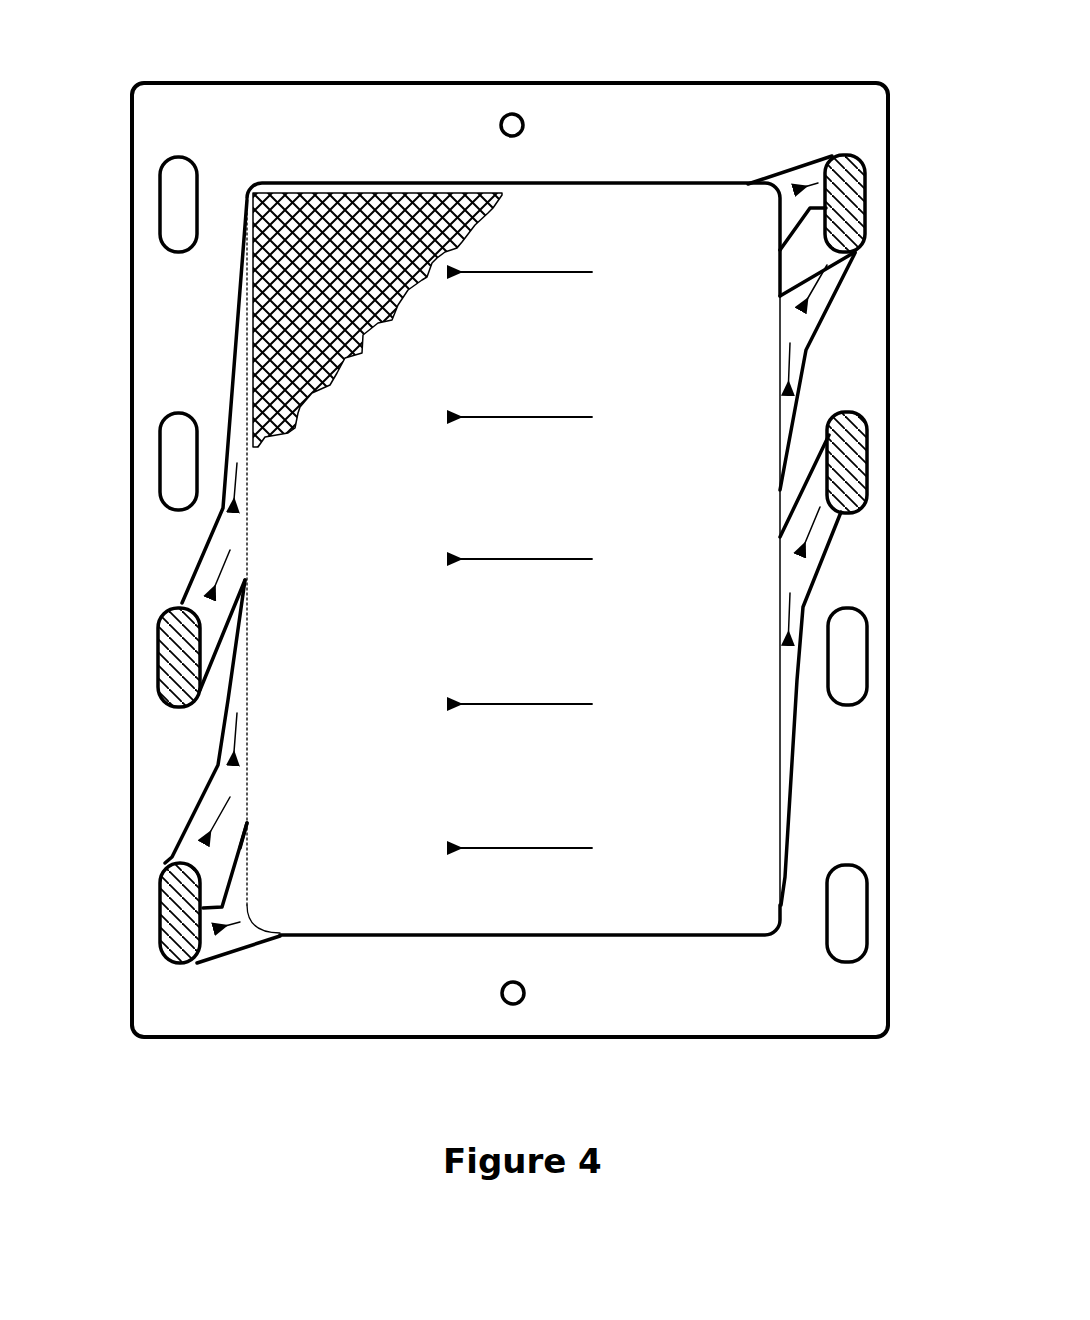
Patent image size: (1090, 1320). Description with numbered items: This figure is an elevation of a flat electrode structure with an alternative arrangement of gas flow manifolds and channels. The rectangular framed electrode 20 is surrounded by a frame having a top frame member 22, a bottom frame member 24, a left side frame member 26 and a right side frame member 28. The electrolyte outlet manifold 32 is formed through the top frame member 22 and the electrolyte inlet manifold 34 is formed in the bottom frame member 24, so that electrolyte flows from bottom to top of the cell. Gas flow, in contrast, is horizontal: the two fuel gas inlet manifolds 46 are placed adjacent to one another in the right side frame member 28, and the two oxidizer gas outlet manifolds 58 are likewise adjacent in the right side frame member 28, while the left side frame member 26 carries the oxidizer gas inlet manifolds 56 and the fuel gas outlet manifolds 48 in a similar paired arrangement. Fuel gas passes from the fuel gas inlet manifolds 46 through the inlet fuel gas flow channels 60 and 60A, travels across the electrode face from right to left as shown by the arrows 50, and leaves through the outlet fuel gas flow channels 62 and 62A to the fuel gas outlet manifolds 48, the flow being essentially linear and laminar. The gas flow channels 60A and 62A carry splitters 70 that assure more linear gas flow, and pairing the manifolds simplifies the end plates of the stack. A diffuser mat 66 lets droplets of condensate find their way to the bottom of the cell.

The framed electrode 20 is at (652, 627).
The top frame member 22 is at (596, 138).
The bottom frame member 24 is at (607, 993).
The left side frame member 26 is at (177, 327).
The right side frame member 28 is at (843, 780).
The electrolyte outlet manifold 32 is at (511, 120).
The electrolyte inlet manifold 34 is at (513, 1000).
The fuel gas inlet manifold 46 is at (845, 195).
The fuel gas outlet manifold 48 is at (175, 657).
The arrows 50 is at (538, 415).
The oxidizer gas inlet manifold 56 is at (177, 207).
The oxidizer gas outlet manifold 58 is at (847, 657).
The inlet fuel gas flow channel 60 is at (805, 547).
The inlet fuel gas flow channel 60A is at (825, 308).
The outlet fuel gas flow channel 62 is at (217, 573).
The outlet fuel gas flow channel 62A is at (218, 818).
The diffuser mat 66 is at (327, 258).
The splitter 70 is at (787, 252).